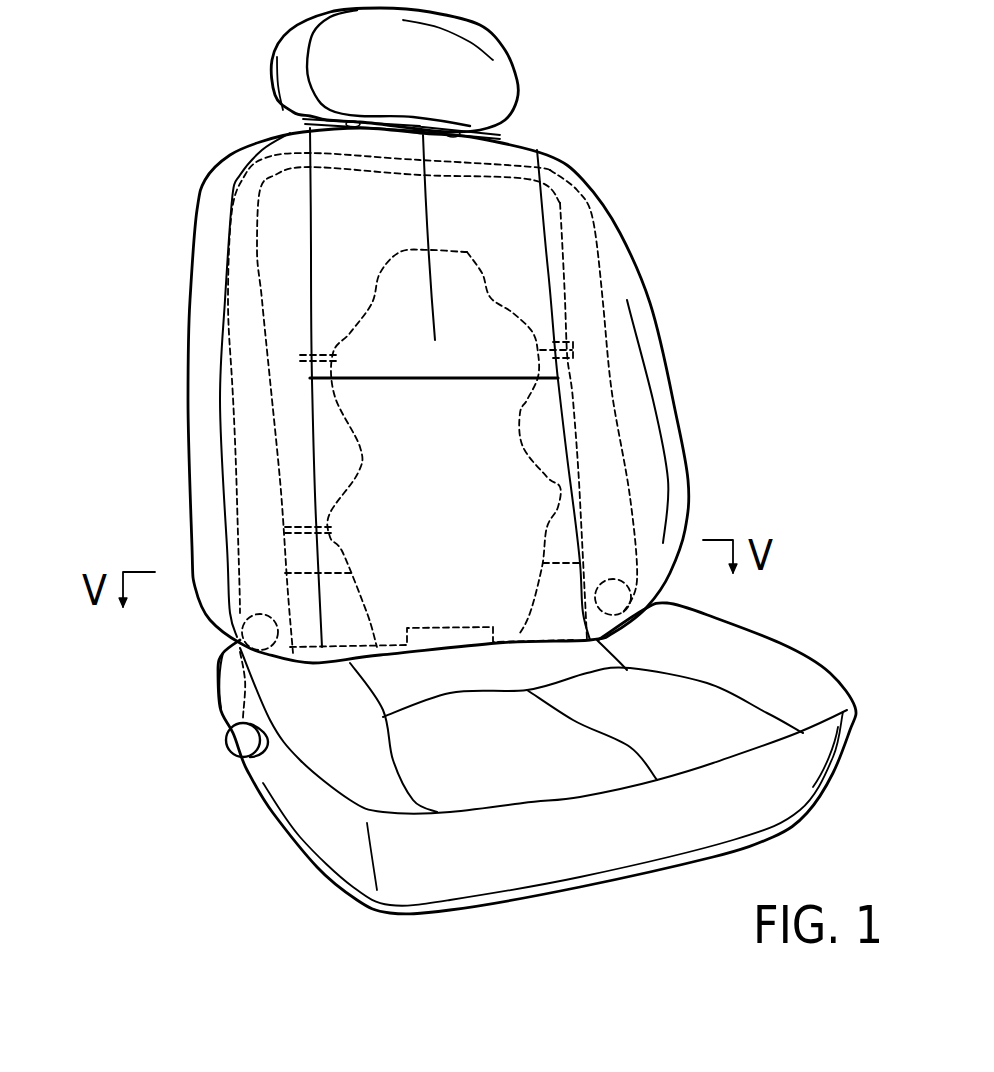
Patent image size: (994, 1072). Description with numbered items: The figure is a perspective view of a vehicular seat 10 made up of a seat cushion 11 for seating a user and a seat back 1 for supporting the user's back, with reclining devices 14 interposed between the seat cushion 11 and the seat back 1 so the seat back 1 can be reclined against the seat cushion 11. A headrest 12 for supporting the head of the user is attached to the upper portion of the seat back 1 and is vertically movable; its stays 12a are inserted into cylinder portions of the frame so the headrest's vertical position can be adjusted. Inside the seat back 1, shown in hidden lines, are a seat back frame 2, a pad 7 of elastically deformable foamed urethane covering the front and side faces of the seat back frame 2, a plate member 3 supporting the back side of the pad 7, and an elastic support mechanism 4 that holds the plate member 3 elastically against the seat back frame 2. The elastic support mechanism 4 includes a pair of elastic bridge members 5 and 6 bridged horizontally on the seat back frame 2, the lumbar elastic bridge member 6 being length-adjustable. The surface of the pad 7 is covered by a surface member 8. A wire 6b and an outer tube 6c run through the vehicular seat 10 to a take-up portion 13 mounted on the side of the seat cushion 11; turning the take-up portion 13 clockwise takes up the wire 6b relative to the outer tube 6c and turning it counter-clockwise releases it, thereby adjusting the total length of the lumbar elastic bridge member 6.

The vehicular seat 10 is at (117, 237).
The seat back 1 is at (188, 172).
The seat cushion 11 is at (797, 663).
The headrest 12 is at (483, 67).
The stays 12a is at (307, 119).
The seat back frame 2 is at (578, 253).
The plate member 3 is at (498, 412).
The elastic support mechanism 4 is at (431, 449).
The elastic bridge member 5 is at (560, 342).
The lumbar elastic bridge member 6 is at (580, 512).
The pad 7 is at (285, 278).
The surface member 8 is at (283, 318).
The take-up portion 13 is at (247, 735).
The reclining devices 14 is at (233, 637).
The wire 6b is at (220, 712).
The outer tube 6c is at (230, 677).